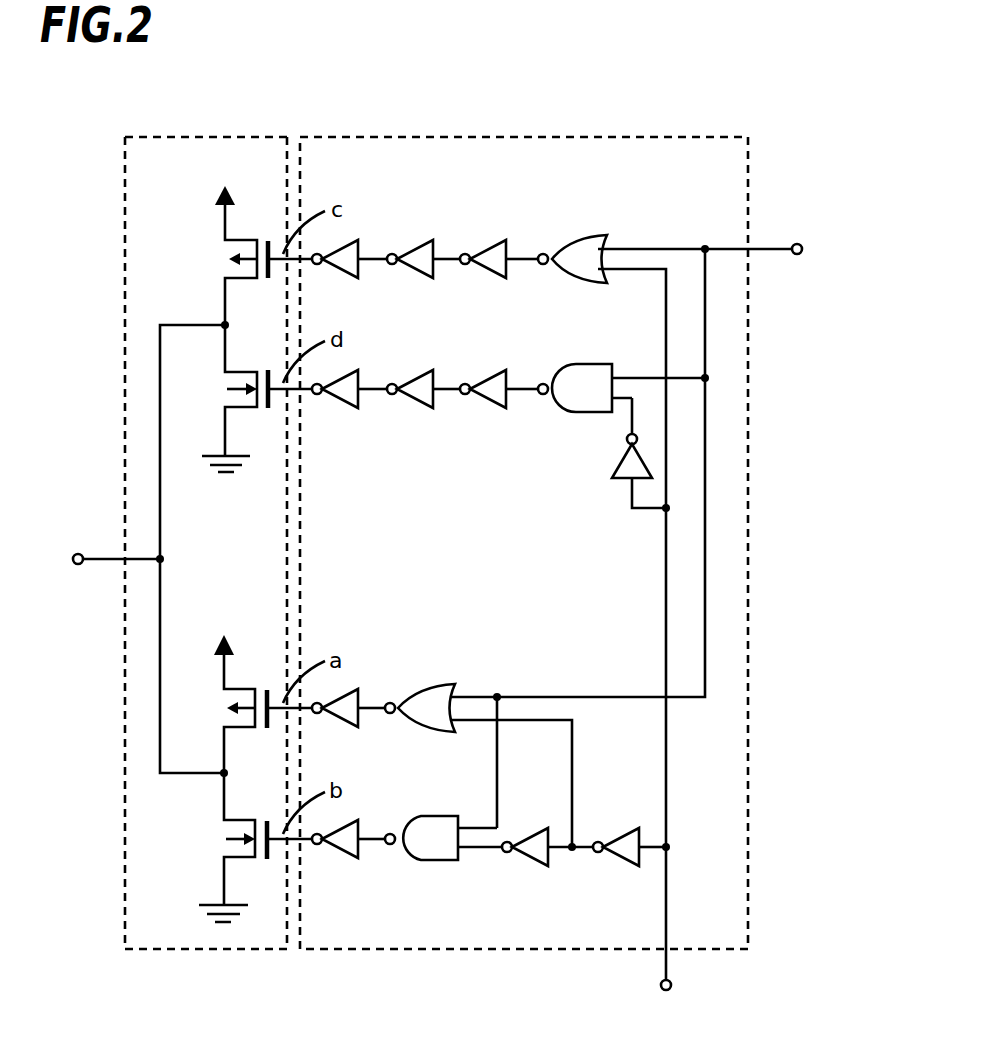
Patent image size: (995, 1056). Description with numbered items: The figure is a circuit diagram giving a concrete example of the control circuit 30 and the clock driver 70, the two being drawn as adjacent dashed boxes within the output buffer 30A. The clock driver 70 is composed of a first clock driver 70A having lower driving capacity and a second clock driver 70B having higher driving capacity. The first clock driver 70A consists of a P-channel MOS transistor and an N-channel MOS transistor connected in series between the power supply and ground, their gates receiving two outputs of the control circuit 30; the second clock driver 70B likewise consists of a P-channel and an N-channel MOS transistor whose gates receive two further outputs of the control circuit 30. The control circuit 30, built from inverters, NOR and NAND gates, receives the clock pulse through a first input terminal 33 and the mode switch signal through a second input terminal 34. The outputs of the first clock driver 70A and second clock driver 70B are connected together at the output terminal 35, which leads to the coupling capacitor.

The control circuit 30 is at (553, 131).
The output buffer circuit 30A is at (191, 948).
The first input terminal 33 is at (797, 243).
The second input terminal 34 is at (672, 984).
The output terminal 35 is at (78, 553).
The clock driver 70 is at (203, 131).
The first clock driver 70A is at (165, 805).
The second clock driver 70B is at (168, 299).